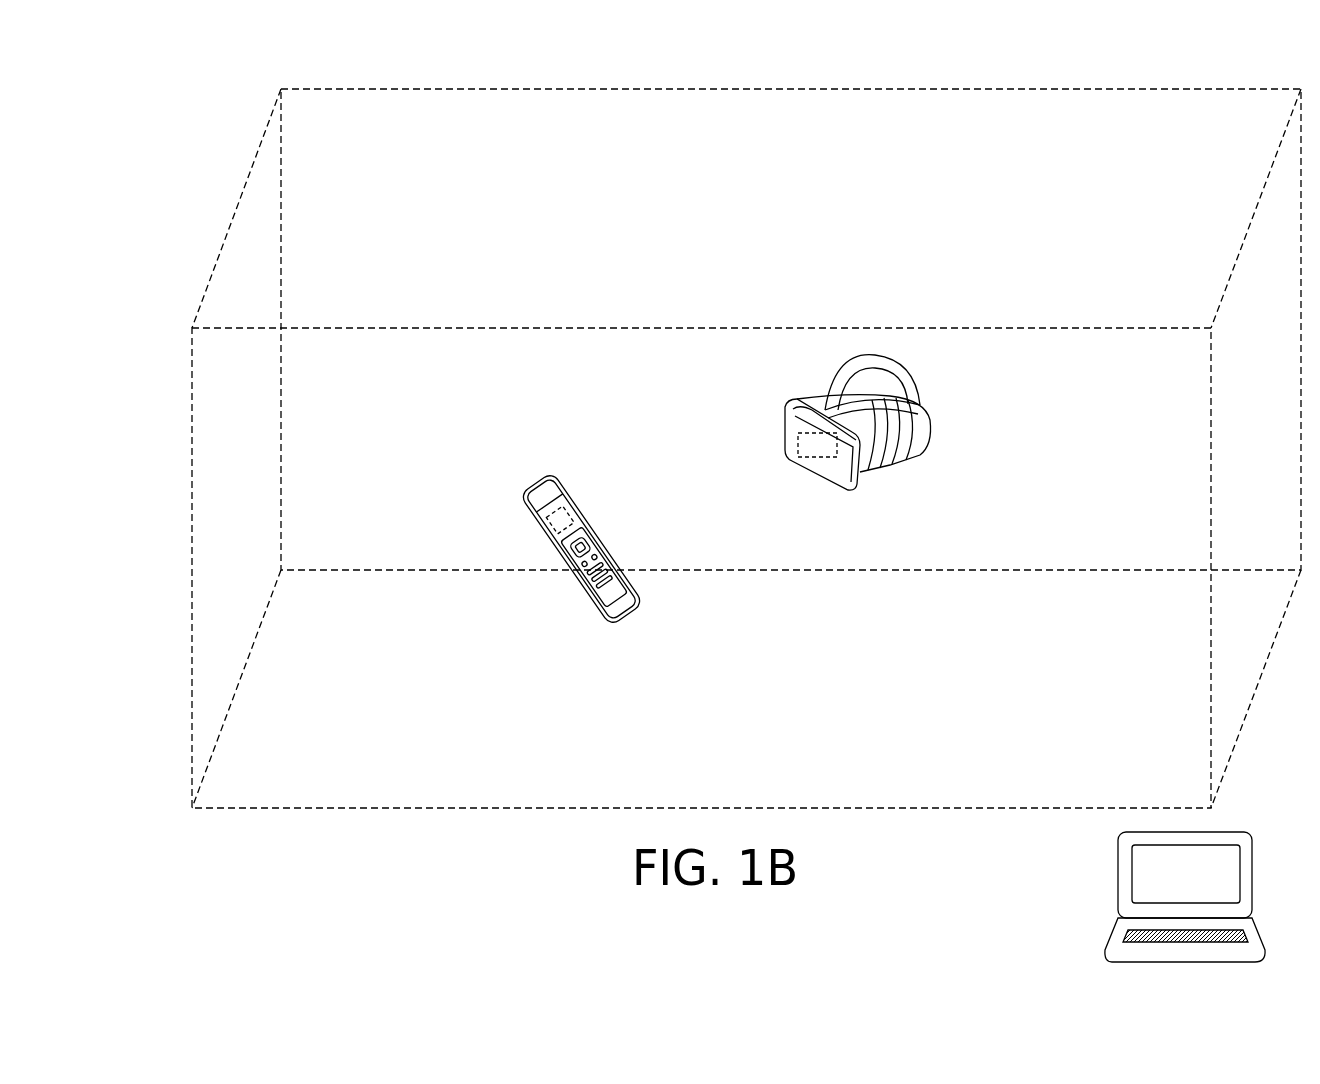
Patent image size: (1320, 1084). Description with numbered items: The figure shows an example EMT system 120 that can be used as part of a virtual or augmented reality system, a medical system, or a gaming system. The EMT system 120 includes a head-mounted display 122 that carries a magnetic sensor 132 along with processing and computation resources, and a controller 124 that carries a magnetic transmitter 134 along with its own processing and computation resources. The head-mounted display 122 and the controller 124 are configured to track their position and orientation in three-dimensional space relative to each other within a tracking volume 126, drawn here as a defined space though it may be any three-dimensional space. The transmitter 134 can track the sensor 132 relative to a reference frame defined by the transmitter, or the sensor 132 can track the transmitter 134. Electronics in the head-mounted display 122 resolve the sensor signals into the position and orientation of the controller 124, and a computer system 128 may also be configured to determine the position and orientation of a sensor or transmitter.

The EMT system 120 is at (192, 99).
The head-mounted display 122 is at (928, 417).
The controller 124 is at (520, 492).
The tracking volume 126 is at (218, 258).
The computer system 128 is at (1115, 910).
The magnetic sensor 132 is at (797, 440).
The magnetic transmitter 134 is at (573, 518).